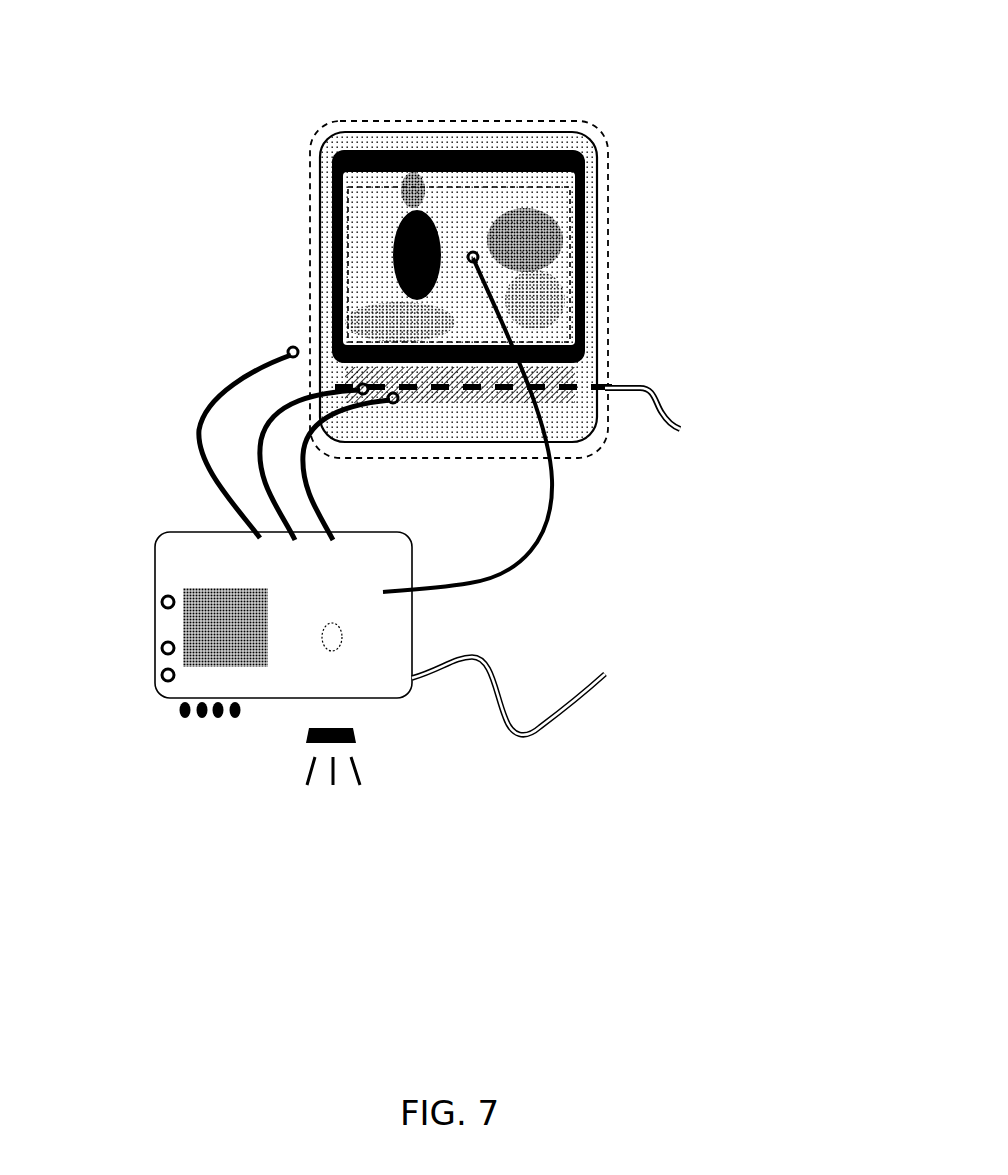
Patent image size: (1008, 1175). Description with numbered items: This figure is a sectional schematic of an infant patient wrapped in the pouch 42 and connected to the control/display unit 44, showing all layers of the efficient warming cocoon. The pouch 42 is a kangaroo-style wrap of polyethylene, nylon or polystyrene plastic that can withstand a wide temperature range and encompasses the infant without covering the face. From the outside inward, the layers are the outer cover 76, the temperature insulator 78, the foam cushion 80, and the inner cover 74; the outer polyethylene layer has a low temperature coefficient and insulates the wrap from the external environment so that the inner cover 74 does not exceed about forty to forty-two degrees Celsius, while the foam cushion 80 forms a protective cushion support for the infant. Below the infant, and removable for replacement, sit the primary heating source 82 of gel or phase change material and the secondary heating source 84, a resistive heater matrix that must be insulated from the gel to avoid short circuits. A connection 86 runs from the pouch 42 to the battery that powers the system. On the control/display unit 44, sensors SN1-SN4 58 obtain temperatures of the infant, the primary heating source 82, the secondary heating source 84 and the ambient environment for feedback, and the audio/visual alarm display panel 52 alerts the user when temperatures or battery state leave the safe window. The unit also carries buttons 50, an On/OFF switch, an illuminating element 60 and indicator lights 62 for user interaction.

The pouch 42 is at (402, 72).
The control/display unit 44 is at (163, 540).
The control buttons 50 is at (140, 592).
The audio/visual alarm display panel 52 is at (190, 590).
The sensors SN1-SN4 58 is at (358, 557).
The light emitter 60 is at (357, 733).
The indicator lights 62 is at (172, 723).
The inner cover 74 is at (562, 182).
The outer cover 76 is at (443, 120).
The temperature insulator 78 is at (314, 130).
The foam cushion 80 is at (585, 243).
The primary heating source 82 is at (345, 380).
The secondary heating source 84 is at (612, 362).
The connection to battery 86 is at (577, 690).